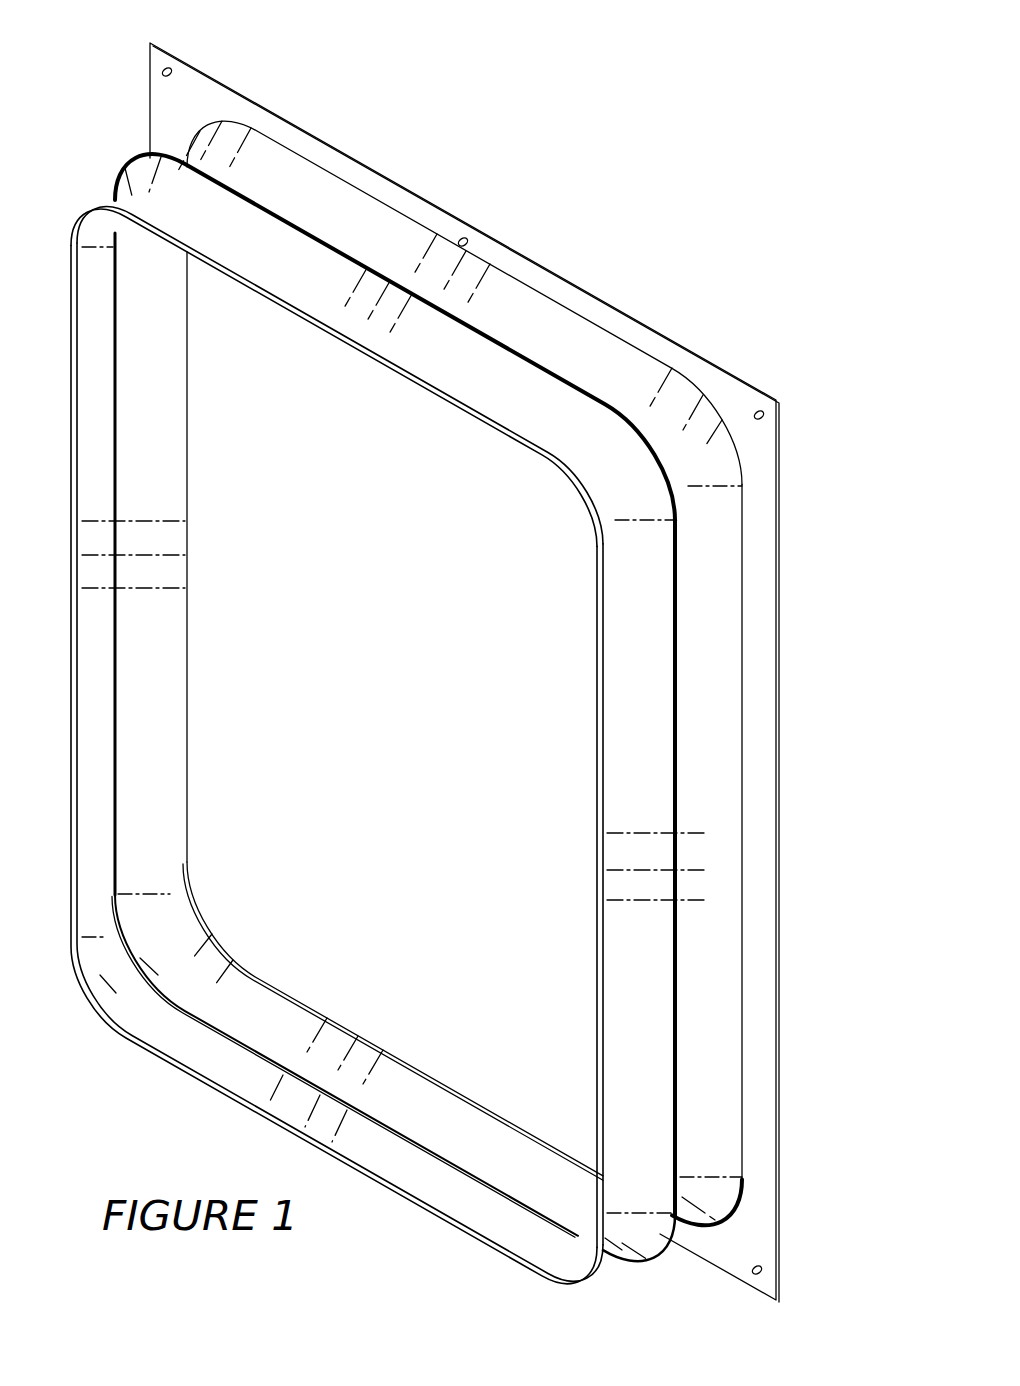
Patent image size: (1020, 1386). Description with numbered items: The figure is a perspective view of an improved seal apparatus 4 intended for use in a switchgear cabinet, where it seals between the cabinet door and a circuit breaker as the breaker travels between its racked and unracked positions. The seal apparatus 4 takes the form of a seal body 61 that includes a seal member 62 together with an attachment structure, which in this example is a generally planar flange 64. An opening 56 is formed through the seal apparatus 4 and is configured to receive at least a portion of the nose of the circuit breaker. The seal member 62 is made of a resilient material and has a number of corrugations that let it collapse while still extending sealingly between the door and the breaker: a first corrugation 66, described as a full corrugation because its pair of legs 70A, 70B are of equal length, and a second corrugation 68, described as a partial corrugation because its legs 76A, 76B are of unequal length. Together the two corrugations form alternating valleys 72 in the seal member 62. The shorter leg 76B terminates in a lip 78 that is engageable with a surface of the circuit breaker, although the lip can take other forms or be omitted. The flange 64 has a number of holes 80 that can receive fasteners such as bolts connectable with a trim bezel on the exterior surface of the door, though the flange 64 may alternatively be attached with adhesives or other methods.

The seal apparatus 4 is at (455, 122).
The opening 56 is at (315, 845).
The seal body 61 is at (586, 277).
The seal member 62 is at (627, 1273).
The flange 64 is at (778, 1120).
The first corrugation 66 is at (730, 999).
The second corrugation 68 is at (625, 621).
The leg 70A is at (722, 662).
The leg 70B is at (174, 622).
The valleys 72 is at (302, 182).
The leg 76A is at (621, 934).
The leg 76B is at (232, 1072).
The lip 78 is at (334, 777).
The holes 80 is at (170, 68).